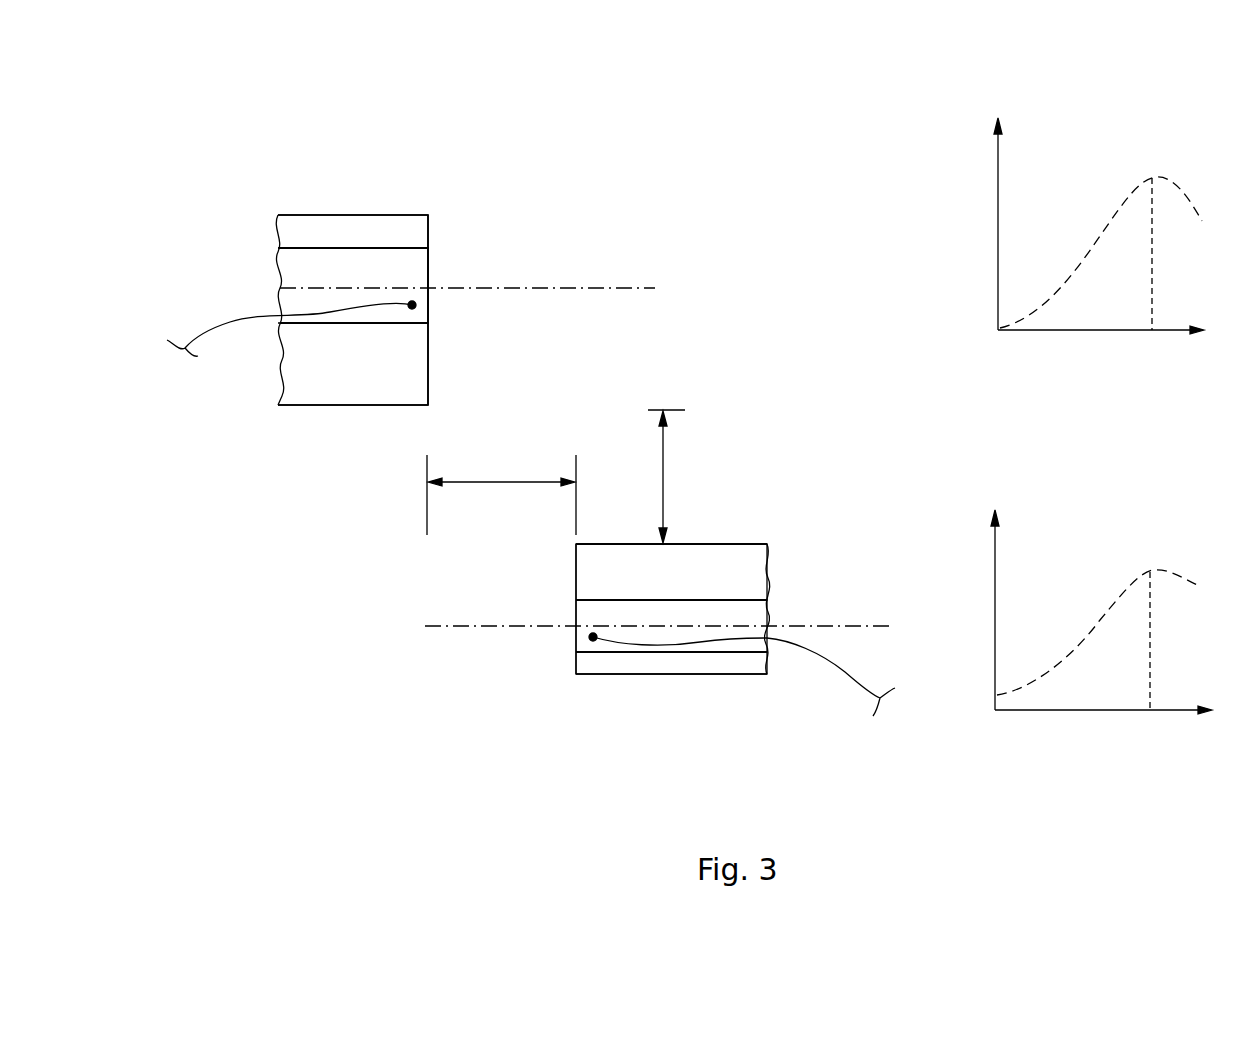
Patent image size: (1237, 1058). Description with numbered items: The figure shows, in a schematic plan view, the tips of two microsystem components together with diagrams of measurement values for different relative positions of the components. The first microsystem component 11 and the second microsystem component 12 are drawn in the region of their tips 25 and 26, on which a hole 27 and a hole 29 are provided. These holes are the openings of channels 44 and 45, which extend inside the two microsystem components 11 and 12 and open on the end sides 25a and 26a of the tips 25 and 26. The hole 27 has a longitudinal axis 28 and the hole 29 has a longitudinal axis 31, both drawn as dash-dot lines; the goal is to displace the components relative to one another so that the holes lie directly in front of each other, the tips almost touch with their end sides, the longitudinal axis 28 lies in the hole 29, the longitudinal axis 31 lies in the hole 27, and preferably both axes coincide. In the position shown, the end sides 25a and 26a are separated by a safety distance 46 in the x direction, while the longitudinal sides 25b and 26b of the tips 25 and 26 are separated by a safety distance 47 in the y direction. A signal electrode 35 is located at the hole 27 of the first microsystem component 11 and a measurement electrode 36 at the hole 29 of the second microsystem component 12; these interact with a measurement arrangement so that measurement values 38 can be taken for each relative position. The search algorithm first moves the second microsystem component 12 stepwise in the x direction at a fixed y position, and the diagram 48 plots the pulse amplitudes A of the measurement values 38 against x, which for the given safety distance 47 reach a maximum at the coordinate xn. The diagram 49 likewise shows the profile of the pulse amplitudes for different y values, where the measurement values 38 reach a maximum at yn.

The first microsystem component 11 is at (297, 238).
The second microsystem component 12 is at (736, 566).
The tip of the first microsystem component 25 is at (352, 412).
The end side of the first tip 25a is at (431, 343).
The longitudinal side of the first tip 25b is at (302, 416).
The tip of the second microsystem component 26 is at (600, 683).
The end side of the second tip 26a is at (578, 656).
The longitudinal side of the second tip 26b is at (695, 545).
The hole 27 is at (410, 277).
The longitudinal axis 28 is at (583, 288).
The hole 29 is at (576, 613).
The longitudinal axis 31 is at (458, 627).
The signal electrode 35 is at (414, 306).
The measurement electrode 36 is at (595, 640).
The measurement values 38 is at (1105, 224).
The channel 44 is at (290, 268).
The channel 45 is at (715, 616).
The safety distance 46 is at (512, 486).
The safety distance 47 is at (663, 460).
The diagram 48 is at (1103, 155).
The diagram 49 is at (1075, 547).